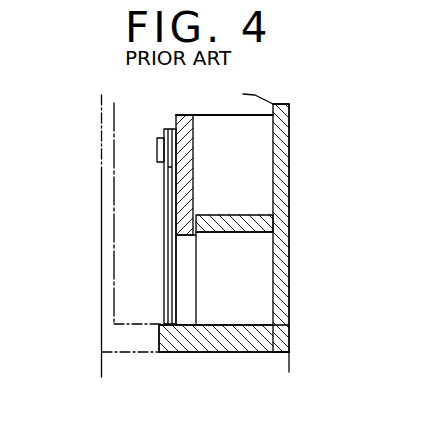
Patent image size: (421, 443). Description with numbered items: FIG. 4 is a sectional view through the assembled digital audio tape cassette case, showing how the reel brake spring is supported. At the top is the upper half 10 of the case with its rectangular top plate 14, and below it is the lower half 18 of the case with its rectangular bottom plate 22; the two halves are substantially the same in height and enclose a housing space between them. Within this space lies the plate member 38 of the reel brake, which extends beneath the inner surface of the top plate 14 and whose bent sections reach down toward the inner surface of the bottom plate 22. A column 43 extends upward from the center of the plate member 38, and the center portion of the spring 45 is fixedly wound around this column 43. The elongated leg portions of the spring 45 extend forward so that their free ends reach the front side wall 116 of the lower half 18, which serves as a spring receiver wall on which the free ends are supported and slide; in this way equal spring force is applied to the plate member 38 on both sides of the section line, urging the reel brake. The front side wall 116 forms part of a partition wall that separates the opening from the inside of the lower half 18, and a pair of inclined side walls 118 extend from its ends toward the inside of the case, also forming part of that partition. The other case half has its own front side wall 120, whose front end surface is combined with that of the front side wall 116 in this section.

The upper half of the tape cassette case 10 is at (101, 207).
The top plate 14 is at (101, 173).
The lower half of the tape cassette case 18 is at (298, 256).
The bottom plate 22 is at (289, 192).
The plate member 38 is at (182, 114).
The column 43 is at (156, 145).
The spring 45 is at (160, 236).
The front side wall 116 is at (238, 348).
The inclined side walls 118 is at (226, 215).
The front side wall of the upper half 120 is at (144, 339).